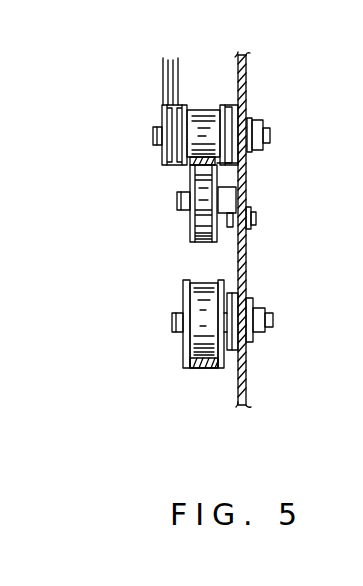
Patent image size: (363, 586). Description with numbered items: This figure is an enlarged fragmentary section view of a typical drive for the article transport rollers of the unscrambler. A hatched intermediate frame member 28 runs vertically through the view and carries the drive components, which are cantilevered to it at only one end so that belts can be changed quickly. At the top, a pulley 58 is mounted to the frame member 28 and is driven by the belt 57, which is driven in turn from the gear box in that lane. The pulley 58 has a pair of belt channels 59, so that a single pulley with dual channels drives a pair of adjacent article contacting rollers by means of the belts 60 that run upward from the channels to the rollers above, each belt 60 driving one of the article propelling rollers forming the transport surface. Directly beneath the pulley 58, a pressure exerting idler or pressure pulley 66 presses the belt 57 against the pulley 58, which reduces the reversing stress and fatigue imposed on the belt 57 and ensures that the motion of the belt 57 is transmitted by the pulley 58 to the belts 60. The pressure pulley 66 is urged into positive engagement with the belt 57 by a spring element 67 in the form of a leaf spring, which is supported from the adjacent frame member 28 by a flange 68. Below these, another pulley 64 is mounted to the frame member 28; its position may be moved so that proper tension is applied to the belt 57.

The intermediate frame member 28 is at (247, 392).
The belt 57 is at (190, 170).
The pulley 58 is at (202, 105).
The belt channels 59 is at (164, 102).
The belts 60 is at (165, 73).
The pulley 64 is at (200, 283).
The pressure pulley 66 is at (190, 225).
The spring element 67 is at (238, 181).
The flange 68 is at (256, 218).